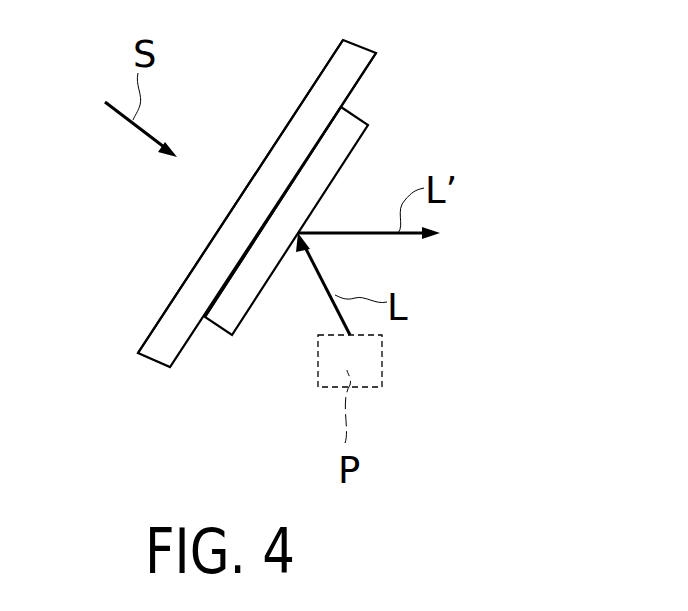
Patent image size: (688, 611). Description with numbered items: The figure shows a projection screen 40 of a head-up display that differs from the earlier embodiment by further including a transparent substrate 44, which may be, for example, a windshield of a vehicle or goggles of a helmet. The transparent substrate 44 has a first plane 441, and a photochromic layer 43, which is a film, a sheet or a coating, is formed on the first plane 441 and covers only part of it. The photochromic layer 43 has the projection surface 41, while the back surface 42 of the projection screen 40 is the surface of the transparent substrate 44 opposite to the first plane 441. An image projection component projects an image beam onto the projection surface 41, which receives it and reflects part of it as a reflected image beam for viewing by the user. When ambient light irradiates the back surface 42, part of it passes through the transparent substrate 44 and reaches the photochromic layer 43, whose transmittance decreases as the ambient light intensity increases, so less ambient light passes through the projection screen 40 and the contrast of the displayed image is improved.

The projection screen 40 is at (282, 462).
The projection surface 41 is at (247, 312).
The back surface 42 is at (168, 305).
The photochromic layer 43 is at (225, 313).
The transparent substrate 44 is at (168, 352).
The first plane 441 is at (358, 83).